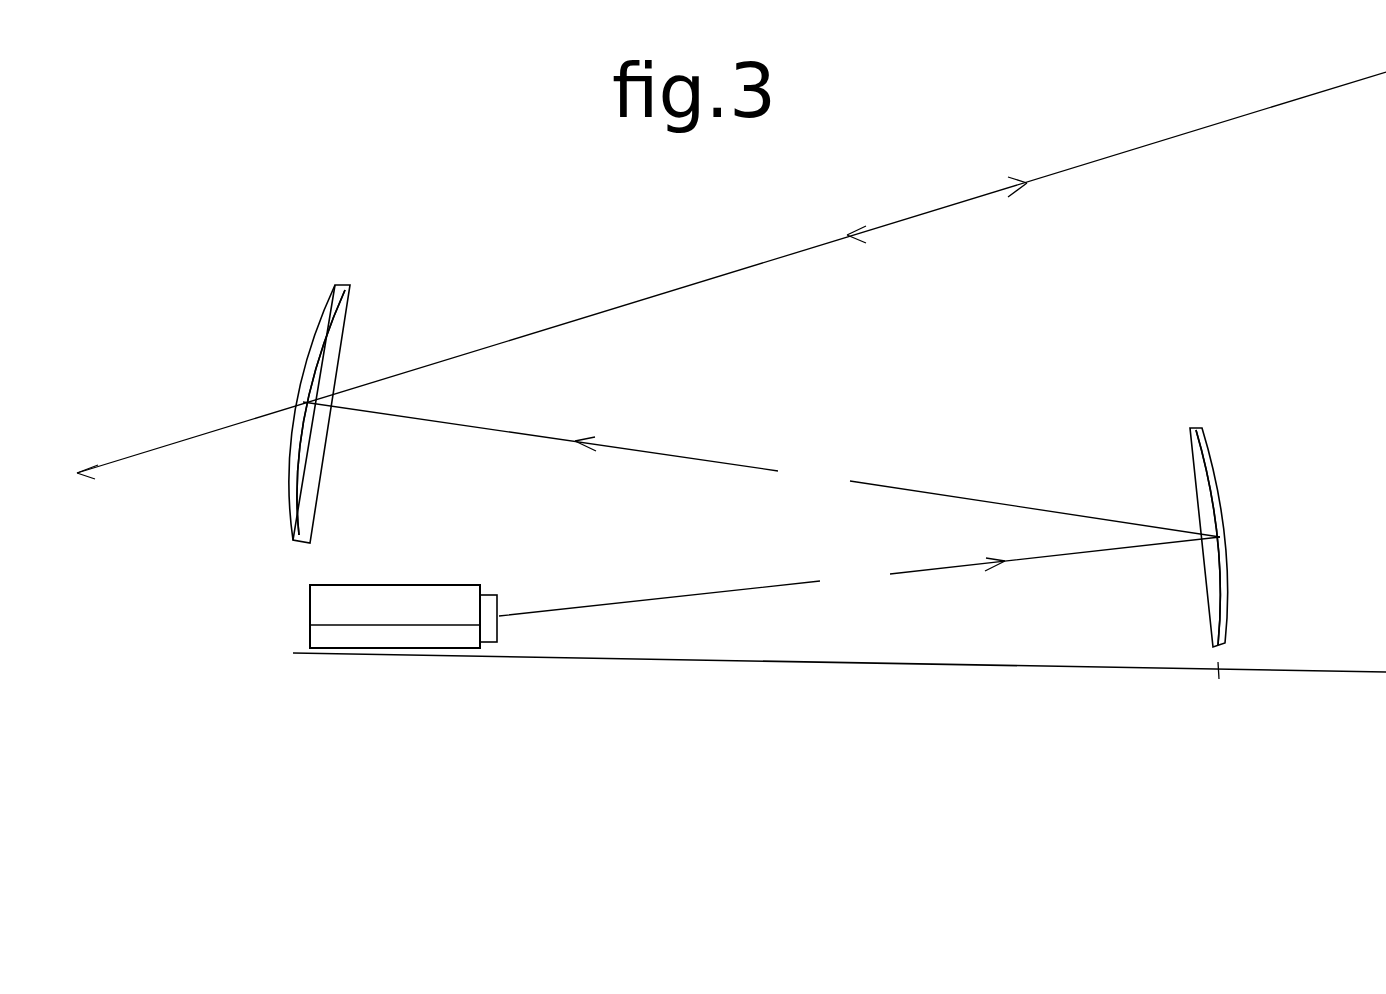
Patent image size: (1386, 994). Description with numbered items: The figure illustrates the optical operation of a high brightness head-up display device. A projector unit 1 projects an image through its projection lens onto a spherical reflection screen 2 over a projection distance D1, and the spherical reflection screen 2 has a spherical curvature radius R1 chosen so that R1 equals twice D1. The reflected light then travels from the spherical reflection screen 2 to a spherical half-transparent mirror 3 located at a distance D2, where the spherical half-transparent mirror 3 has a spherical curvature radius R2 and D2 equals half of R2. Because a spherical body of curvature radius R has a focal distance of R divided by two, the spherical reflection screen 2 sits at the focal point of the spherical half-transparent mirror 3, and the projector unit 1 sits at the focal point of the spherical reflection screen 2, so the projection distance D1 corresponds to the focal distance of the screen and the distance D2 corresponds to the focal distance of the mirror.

The projector unit 1 is at (390, 633).
The spherical reflection screen 2 is at (1221, 593).
The spherical half-transparent mirror 3 is at (297, 524).
The spherical curvature radius of the spherical reflection screen R1 is at (1215, 489).
The spherical curvature radius of the spherical half-transparent mirror R2 is at (320, 338).
The projection distance D1 is at (859, 576).
The distance from the spherical reflection screen to the spherical half-transparent D2 is at (761, 469).